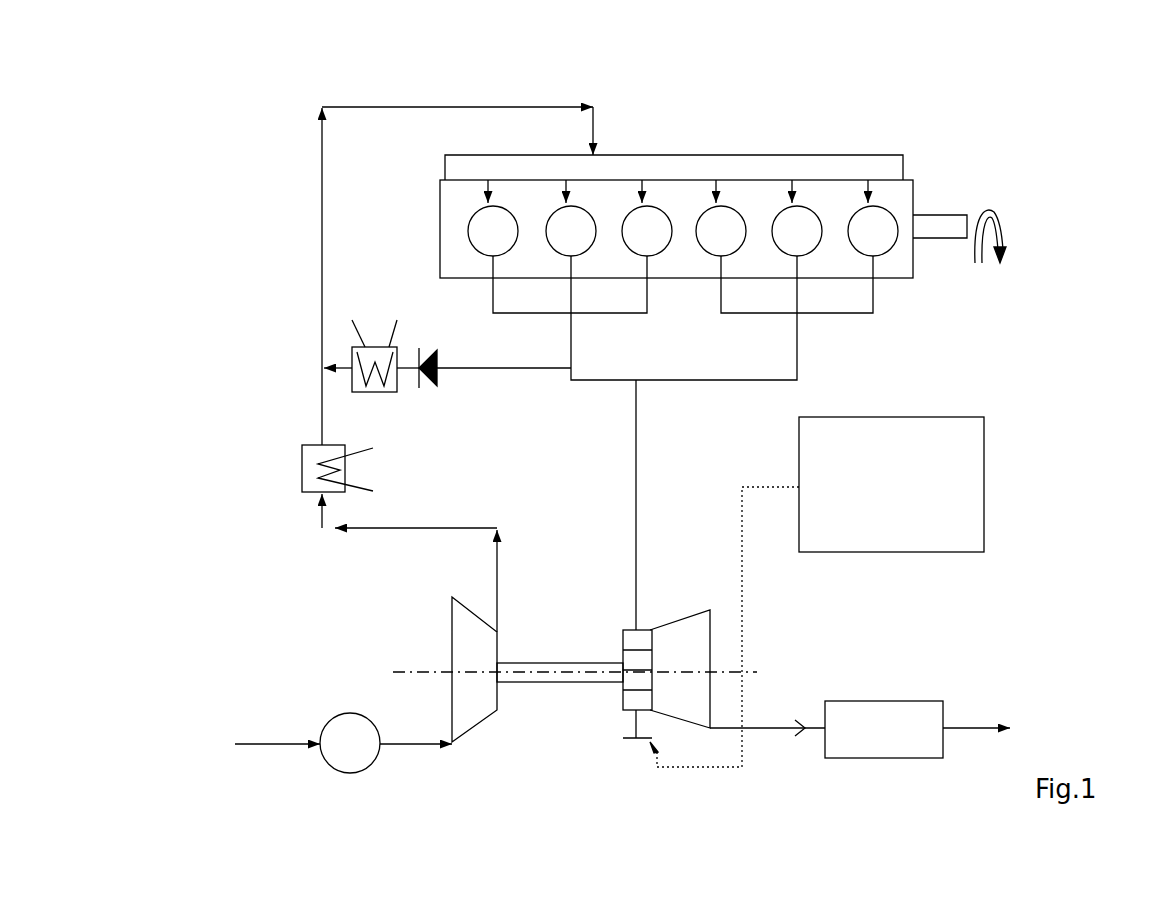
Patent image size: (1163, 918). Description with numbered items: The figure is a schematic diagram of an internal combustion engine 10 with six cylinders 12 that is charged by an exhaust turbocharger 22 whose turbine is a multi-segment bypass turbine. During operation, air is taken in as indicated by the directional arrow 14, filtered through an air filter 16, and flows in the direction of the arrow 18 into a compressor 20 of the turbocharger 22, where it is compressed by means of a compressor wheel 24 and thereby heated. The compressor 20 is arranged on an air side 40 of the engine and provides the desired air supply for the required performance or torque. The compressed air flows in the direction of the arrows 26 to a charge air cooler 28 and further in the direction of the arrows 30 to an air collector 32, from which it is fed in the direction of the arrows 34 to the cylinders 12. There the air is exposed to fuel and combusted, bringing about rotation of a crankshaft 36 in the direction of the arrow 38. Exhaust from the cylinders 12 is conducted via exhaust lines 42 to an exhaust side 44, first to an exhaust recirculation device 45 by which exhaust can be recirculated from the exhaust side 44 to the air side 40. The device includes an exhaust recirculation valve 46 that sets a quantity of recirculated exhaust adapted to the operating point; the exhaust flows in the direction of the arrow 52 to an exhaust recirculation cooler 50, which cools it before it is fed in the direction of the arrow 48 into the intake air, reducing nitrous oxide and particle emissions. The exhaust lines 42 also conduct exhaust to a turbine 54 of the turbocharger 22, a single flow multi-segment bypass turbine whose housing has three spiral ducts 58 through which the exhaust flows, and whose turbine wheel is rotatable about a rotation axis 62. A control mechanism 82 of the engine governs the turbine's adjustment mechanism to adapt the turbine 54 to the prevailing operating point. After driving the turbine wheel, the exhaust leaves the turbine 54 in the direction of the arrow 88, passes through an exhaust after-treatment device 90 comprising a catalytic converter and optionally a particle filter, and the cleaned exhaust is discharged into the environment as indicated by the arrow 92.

The internal combustion engine 10 is at (925, 312).
The cylinders 12 is at (508, 244).
The directional arrow 14 is at (258, 740).
The air filter 16 is at (343, 712).
The arrow 18 is at (401, 740).
The compressor 20 is at (476, 748).
The turbocharger 22 is at (540, 750).
The compressor wheel 24 is at (458, 633).
The arrows 26 is at (320, 515).
The charge air cooler 28 is at (302, 475).
The arrows 30 is at (322, 178).
The air collector 32 is at (646, 155).
The arrows 34 is at (491, 193).
The crankshaft 36 is at (930, 218).
The arrow 38 is at (1005, 228).
The air side 40 is at (285, 108).
The exhaust lines 42 is at (818, 352).
The exhaust side 44 is at (1005, 165).
The exhaust recirculation device 45 is at (402, 302).
The exhaust recirculation valve 46 is at (437, 360).
The arrow 48 is at (348, 366).
The exhaust recirculation cooler 50 is at (376, 345).
The arrow 52 is at (637, 398).
The turbine 54 is at (634, 750).
The spiral ducts 58 is at (648, 658).
The rotation axis 62 is at (545, 668).
The control mechanism 82 is at (978, 440).
The arrow 88 is at (782, 722).
The exhaust after-treatment device 90 is at (893, 705).
The arrow 92 is at (979, 722).